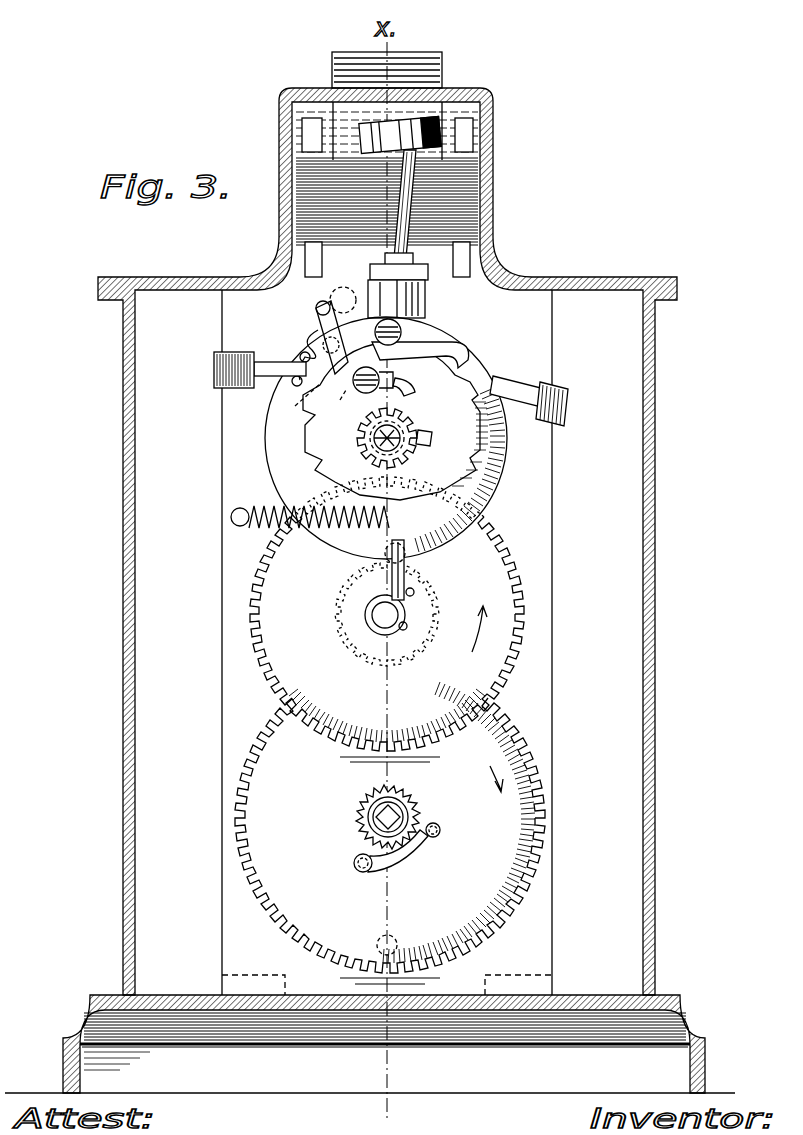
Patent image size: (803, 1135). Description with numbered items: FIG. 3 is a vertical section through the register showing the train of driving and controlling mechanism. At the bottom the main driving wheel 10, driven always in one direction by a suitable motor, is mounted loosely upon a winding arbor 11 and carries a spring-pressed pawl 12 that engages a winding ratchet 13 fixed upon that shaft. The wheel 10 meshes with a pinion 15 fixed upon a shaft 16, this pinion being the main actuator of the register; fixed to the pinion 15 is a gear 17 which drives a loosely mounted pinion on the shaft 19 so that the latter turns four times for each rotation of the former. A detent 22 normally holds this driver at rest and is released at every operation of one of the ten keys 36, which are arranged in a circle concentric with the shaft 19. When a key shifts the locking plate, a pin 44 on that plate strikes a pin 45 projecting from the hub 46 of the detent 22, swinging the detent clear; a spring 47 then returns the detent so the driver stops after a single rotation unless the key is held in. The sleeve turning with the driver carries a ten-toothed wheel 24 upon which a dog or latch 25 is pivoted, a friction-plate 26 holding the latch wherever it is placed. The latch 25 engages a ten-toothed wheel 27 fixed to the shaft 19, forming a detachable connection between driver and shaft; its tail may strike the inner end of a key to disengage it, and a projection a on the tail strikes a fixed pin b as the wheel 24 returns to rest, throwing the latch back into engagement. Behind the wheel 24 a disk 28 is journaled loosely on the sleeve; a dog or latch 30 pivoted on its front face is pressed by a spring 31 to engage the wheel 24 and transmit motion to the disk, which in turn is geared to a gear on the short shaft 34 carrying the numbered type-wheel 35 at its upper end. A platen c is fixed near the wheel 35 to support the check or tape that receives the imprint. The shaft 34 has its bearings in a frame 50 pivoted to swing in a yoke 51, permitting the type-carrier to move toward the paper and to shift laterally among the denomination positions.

The main driving wheel 10 is at (390, 833).
The winding arbor 11 is at (380, 815).
The spring-pressed pawl 12 is at (388, 873).
The winding ratchet 13 is at (418, 808).
The pinion 15 is at (334, 612).
The shaft 16 is at (378, 622).
The gear 17 is at (387, 619).
The shaft 19 is at (352, 458).
The detent 22 is at (410, 583).
The ten-toothed wheel 24 is at (395, 421).
The dog or latch 25 is at (412, 395).
The friction-plate 26 is at (394, 382).
The ten-toothed wheel 27 is at (430, 440).
The disk 28 is at (496, 472).
The dog or latch 30 is at (440, 342).
The spring 31 is at (316, 342).
The short shaft 34 is at (402, 180).
The numbered wheel 35 is at (395, 132).
The keys 36 is at (345, 288).
The pin 44 is at (346, 566).
The pin 45 is at (414, 596).
The hub 46 is at (406, 628).
The spring 47 is at (268, 512).
The frame 50 is at (268, 362).
The yoke 51 is at (512, 384).
The projection a is at (338, 403).
The fixed pin b is at (300, 403).
The platen c is at (440, 87).